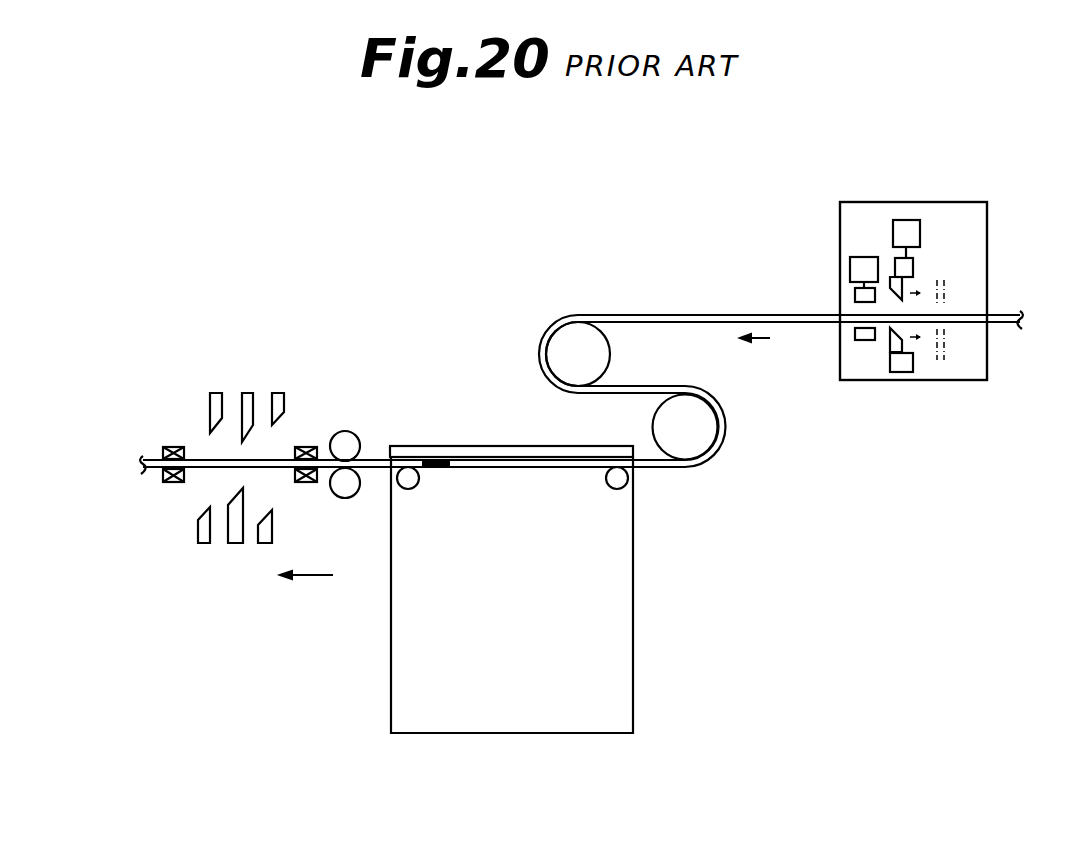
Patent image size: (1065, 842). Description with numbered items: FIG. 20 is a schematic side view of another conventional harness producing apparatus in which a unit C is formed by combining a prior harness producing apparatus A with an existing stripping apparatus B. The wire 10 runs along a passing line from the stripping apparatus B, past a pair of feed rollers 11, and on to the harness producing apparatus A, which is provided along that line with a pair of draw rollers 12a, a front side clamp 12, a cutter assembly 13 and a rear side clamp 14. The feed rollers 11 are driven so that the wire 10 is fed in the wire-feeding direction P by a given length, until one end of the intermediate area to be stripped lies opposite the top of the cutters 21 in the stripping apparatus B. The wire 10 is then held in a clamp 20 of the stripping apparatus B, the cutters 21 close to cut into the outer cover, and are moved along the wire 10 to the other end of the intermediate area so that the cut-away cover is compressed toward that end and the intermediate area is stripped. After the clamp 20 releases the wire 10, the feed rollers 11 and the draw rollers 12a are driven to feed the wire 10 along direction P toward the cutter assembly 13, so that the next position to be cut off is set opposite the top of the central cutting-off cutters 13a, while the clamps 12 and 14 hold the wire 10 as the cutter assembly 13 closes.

The wire 10 is at (693, 315).
The feed rollers 11 is at (594, 358).
The front side clamp 12 is at (310, 447).
The draw rollers 12a is at (346, 446).
The cutter assembly 13 is at (258, 364).
The cutting-off cutters 13a is at (233, 528).
The rear side clamp 14 is at (170, 446).
The clamp 20 is at (866, 257).
The cutters 21 is at (888, 276).
The harness producing apparatus A is at (452, 382).
The stripping apparatus B is at (800, 221).
The unit C is at (588, 190).
The wire-feeding direction P is at (512, 461).